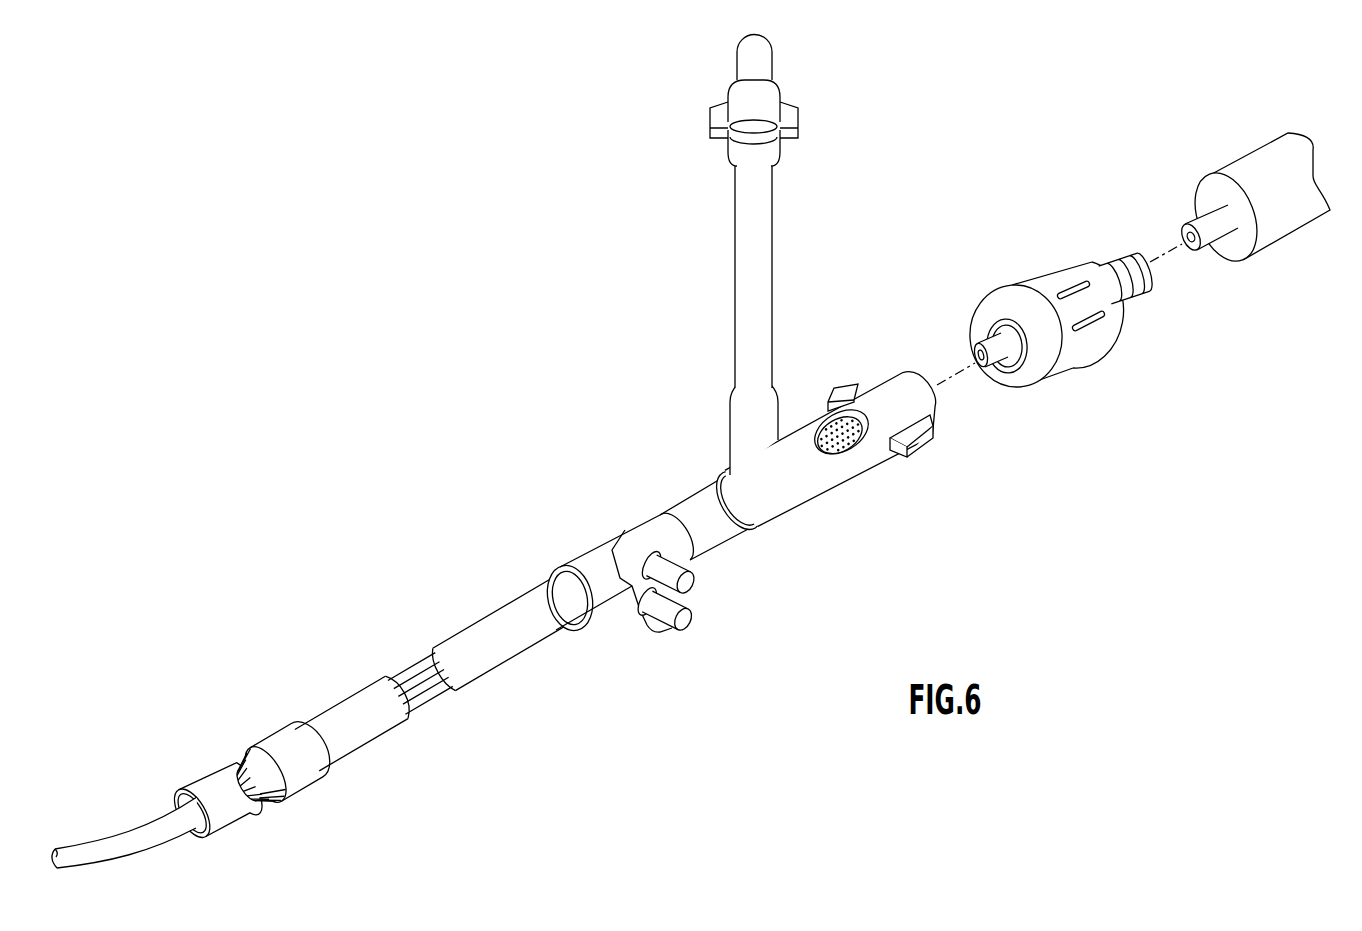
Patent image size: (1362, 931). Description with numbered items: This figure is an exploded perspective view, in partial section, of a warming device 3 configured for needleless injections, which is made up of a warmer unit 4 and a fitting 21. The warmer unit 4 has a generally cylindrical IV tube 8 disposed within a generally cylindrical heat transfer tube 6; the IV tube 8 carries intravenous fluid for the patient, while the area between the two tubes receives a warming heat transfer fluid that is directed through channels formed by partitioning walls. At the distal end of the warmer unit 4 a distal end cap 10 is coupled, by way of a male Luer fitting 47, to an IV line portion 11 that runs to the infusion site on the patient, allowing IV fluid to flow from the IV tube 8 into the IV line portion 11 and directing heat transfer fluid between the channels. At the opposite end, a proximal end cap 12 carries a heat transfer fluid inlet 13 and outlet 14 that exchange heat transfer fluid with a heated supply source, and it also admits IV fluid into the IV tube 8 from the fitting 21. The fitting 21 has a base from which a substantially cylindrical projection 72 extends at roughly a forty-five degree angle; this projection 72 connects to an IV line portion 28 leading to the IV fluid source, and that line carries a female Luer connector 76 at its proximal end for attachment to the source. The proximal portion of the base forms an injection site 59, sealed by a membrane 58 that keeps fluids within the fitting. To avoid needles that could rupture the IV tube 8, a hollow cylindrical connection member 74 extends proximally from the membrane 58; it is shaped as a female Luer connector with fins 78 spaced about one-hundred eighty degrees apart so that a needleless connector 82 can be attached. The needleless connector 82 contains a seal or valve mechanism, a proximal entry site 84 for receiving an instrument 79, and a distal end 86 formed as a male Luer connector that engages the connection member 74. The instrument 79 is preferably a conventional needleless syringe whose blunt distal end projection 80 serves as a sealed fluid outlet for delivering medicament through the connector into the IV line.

The device 3 is at (604, 551).
The warmer unit 4 is at (438, 655).
The heat transfer tube 6 is at (421, 712).
The IV tube 8 is at (416, 668).
The distal end cap 10 is at (235, 712).
The IV line portion 11 is at (128, 830).
The proximal end cap 12 is at (635, 581).
The heat transfer fluid inlet 13 is at (688, 587).
The heat transfer fluid outlet 14 is at (661, 630).
The fitting 21 is at (879, 427).
The IV line portion 28 is at (734, 308).
The male Luer fitting 47 is at (197, 778).
The membrane 58 is at (848, 443).
The injection site 59 is at (850, 502).
The projection 72 is at (729, 436).
The connection member 74 is at (879, 457).
The female Luer connector 76 is at (773, 66).
The fins 78 is at (840, 398).
The instrument 79 is at (1298, 211).
The blunt distal end projection 80 is at (1224, 238).
The needleless connector 82 is at (1074, 273).
The proximal entry site 84 is at (1112, 252).
The distal end 86 is at (1023, 297).